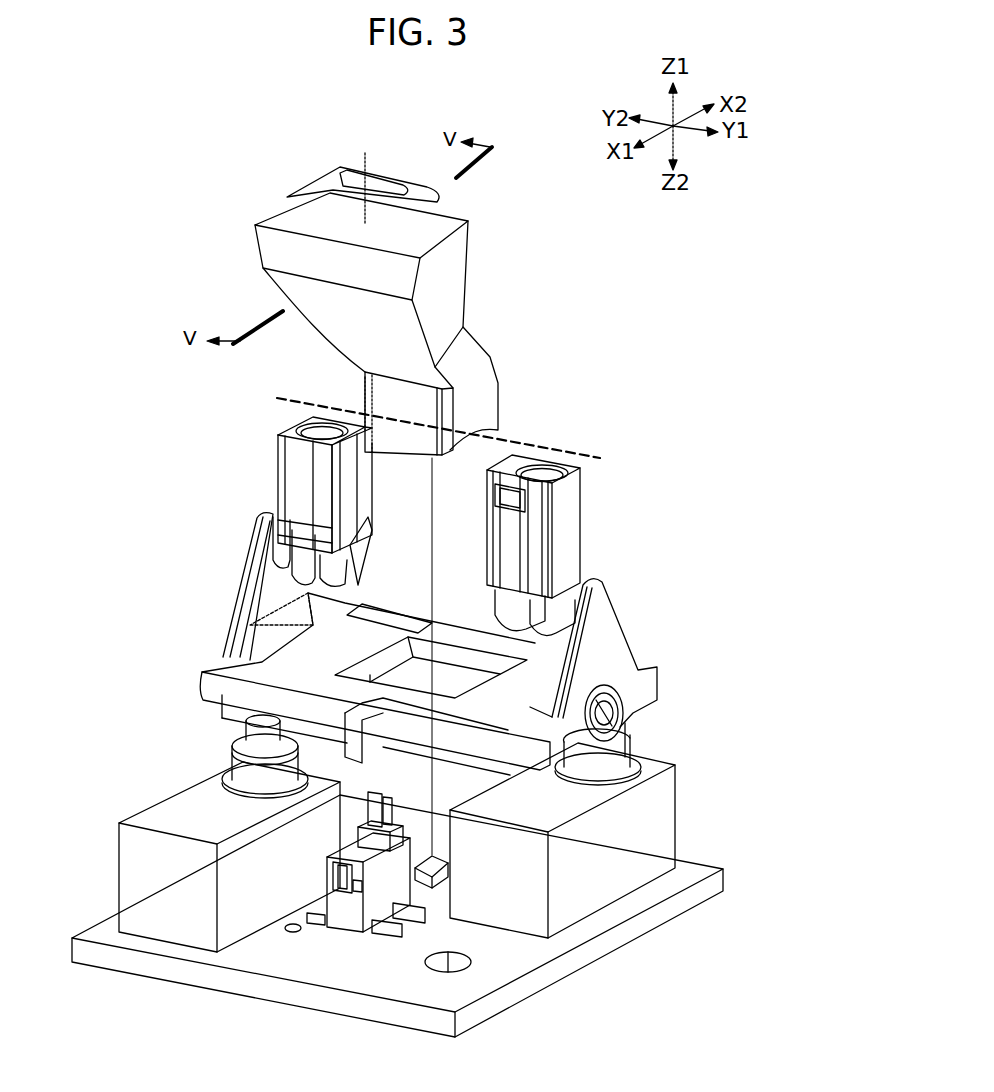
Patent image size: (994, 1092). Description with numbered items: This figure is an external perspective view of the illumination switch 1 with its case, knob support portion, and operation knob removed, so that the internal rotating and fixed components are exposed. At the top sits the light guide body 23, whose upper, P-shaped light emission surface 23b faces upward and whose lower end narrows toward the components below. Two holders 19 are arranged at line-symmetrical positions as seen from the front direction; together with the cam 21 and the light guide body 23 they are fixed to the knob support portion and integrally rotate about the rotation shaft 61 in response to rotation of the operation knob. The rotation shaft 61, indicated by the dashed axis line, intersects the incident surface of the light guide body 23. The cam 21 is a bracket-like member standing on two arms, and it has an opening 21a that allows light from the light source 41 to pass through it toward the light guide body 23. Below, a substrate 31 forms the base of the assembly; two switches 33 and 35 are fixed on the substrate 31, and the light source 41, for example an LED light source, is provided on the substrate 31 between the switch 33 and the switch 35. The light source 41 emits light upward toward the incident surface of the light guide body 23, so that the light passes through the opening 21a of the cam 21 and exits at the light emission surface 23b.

The illumination switch 1 is at (566, 1001).
The holder 19 is at (297, 472).
The cam 21 is at (605, 612).
The opening 21a is at (373, 667).
The light guide body 23 is at (455, 289).
The light emission surface 23b is at (443, 224).
The substrate 31 is at (653, 925).
The switch 33 is at (613, 752).
The switch 35 is at (242, 765).
The light source 41 is at (377, 888).
The rotation shaft 61 is at (573, 452).